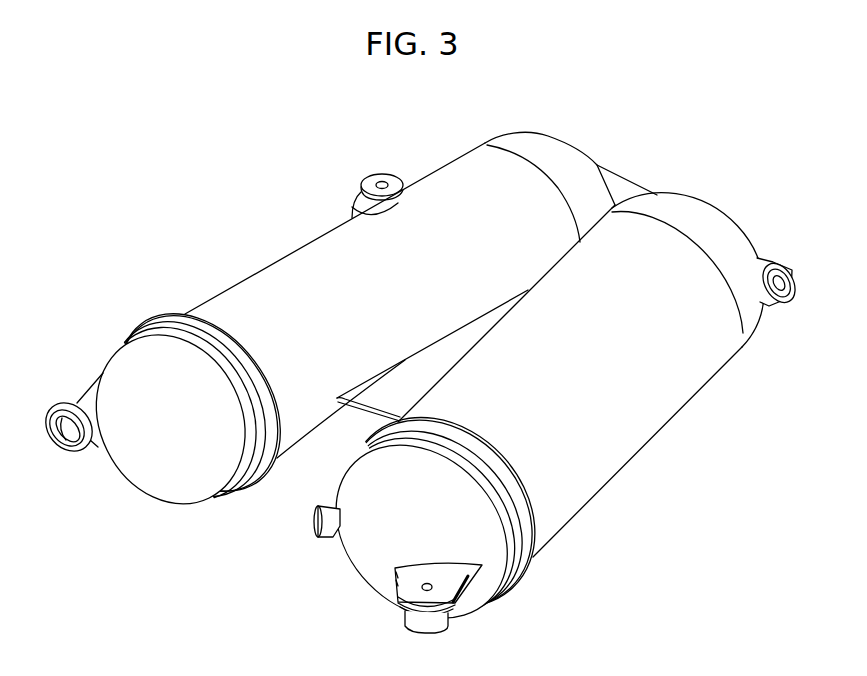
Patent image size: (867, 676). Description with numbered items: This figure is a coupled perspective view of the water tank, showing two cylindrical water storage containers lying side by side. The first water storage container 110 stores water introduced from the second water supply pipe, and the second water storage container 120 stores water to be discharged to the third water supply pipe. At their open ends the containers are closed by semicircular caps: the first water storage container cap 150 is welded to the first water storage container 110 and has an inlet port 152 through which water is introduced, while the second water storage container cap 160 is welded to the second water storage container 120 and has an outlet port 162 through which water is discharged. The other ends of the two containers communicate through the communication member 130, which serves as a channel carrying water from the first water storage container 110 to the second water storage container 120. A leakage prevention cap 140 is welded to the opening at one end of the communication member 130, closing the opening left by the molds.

The first water storage container 110 is at (620, 440).
The second water storage container 120 is at (306, 253).
The communication member 130 is at (627, 187).
The leakage prevention cap 140 is at (778, 300).
The first water storage container cap 150 is at (355, 565).
The inlet port 152 is at (315, 520).
The second water storage container cap 160 is at (173, 477).
The outlet port 162 is at (75, 437).